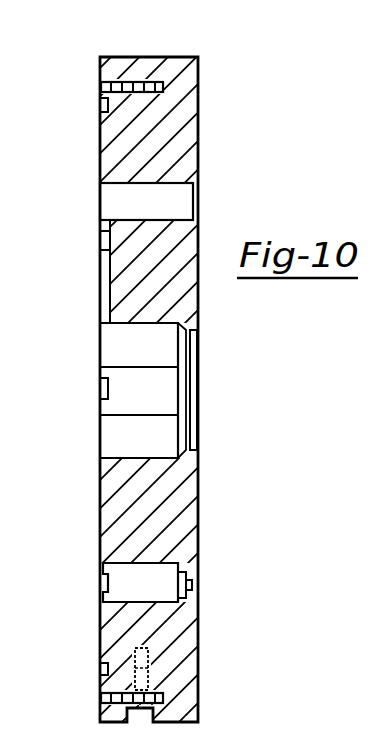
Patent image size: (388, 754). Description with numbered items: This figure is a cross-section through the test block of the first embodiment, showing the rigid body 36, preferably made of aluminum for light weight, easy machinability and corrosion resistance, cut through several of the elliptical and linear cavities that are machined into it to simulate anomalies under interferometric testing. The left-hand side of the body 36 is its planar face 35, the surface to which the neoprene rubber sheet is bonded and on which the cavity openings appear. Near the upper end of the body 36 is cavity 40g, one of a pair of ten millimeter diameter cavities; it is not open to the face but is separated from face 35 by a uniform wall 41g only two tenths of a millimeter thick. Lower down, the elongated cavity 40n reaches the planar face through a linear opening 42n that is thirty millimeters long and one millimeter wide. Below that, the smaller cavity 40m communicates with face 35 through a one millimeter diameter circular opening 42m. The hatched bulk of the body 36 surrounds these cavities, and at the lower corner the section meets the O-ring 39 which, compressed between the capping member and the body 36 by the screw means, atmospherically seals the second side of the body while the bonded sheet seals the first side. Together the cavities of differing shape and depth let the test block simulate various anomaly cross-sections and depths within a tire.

The planar face 35 is at (192, 285).
The body 36 is at (148, 65).
The O-ring 39 is at (290, 752).
The cavity 40g is at (118, 193).
The cavity 40m is at (120, 582).
The cavity 40n is at (121, 375).
The wall 41g is at (195, 198).
The circular opening 42m is at (195, 582).
The linear opening 42n is at (196, 438).